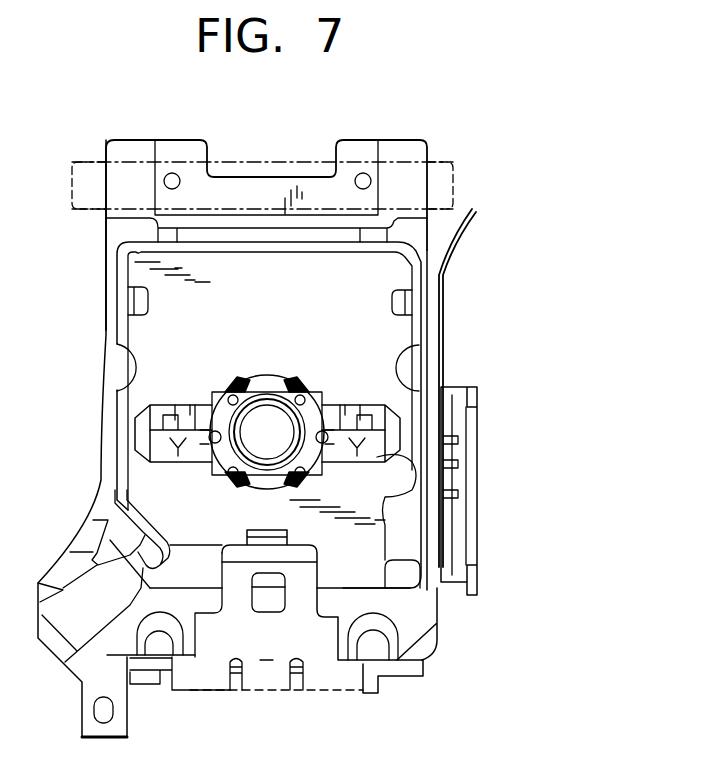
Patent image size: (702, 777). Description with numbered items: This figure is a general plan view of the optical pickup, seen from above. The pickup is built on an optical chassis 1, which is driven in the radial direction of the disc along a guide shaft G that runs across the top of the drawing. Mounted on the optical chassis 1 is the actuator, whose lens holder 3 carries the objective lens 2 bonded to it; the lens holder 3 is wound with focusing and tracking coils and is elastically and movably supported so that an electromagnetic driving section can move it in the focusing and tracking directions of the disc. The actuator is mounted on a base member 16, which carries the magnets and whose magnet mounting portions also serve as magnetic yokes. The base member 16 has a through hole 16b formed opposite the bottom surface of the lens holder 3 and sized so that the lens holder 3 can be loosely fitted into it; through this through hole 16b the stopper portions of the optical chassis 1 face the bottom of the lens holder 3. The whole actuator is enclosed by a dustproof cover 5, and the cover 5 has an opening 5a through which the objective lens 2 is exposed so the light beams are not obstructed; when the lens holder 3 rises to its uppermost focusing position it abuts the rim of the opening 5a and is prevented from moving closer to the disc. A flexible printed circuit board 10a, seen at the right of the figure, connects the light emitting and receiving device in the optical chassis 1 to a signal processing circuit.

The optical chassis 1 is at (108, 378).
The objective lens 2 is at (275, 430).
The lens holder 3 is at (320, 410).
The cover 5 is at (158, 338).
The opening 5a is at (246, 377).
The flexible printed circuit board 10a is at (453, 245).
The base member 16 is at (405, 545).
The through hole 16b is at (383, 475).
The guide shaft G is at (438, 162).